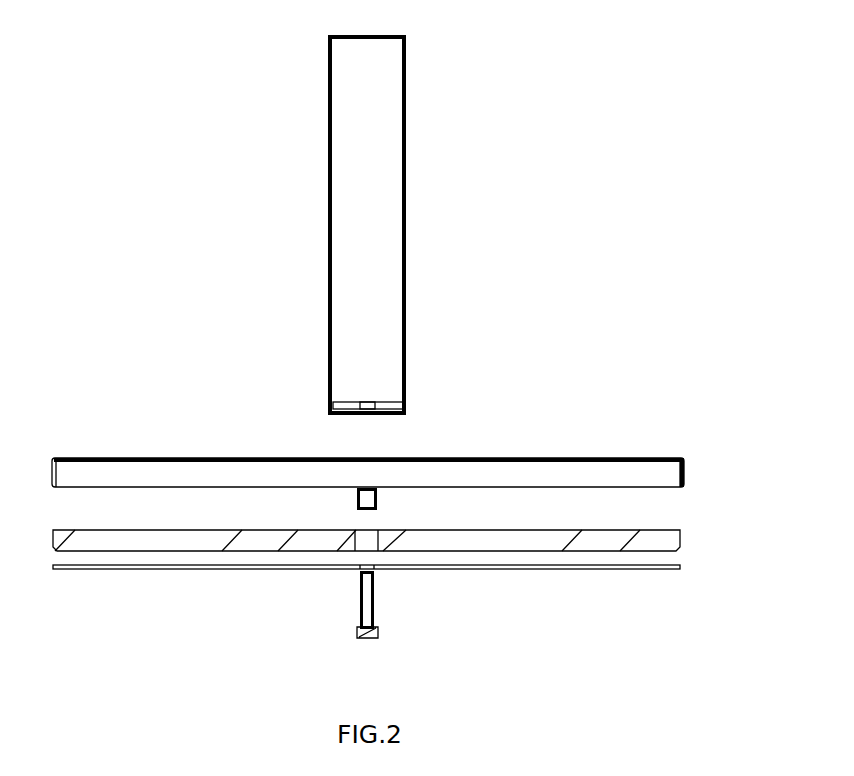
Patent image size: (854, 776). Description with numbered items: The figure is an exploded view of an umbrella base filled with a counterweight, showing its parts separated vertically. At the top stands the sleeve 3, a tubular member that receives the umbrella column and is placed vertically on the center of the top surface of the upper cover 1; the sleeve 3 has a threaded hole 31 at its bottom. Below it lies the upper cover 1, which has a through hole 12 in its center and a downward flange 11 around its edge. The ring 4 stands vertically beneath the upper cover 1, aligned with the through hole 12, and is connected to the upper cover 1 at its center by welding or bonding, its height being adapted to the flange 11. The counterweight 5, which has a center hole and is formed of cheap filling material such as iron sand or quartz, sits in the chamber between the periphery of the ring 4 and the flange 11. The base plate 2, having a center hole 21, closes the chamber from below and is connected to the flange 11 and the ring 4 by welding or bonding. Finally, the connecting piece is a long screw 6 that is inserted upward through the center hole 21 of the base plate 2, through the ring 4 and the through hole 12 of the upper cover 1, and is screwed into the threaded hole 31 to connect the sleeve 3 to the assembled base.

The upper cover 1 is at (570, 458).
The flange 11 is at (687, 468).
The through hole 12 is at (373, 457).
The base plate 2 is at (523, 570).
The center hole 21 is at (374, 570).
The sleeve 3 is at (406, 205).
The threaded hole 31 is at (368, 400).
The ring 4 is at (378, 505).
The counterweight 5 is at (655, 540).
The long screw 6 is at (370, 607).